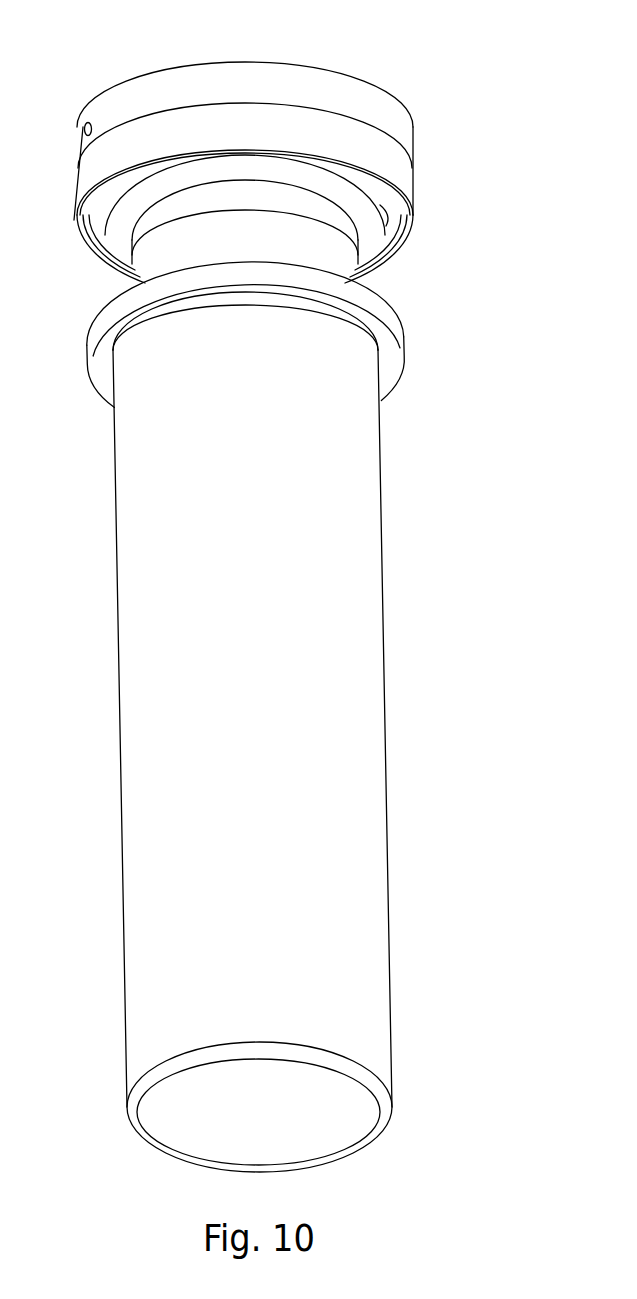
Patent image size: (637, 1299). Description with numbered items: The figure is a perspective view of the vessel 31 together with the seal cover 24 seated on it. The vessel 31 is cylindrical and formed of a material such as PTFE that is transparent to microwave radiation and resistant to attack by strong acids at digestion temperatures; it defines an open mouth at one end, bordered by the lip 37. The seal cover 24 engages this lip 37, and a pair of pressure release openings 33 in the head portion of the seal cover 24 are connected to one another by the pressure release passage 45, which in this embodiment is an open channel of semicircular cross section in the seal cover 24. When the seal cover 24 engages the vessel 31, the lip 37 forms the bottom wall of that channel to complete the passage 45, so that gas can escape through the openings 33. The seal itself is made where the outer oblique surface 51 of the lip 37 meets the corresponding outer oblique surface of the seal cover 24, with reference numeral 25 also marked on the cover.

The seal cover 24 is at (440, 72).
The cap 25 is at (396, 173).
The vessel 31 is at (259, 655).
The pressure release openings 33 is at (85, 127).
The lip 37 is at (386, 372).
The pressure release passage 45 is at (88, 260).
The outer oblique surface 51 is at (258, 266).